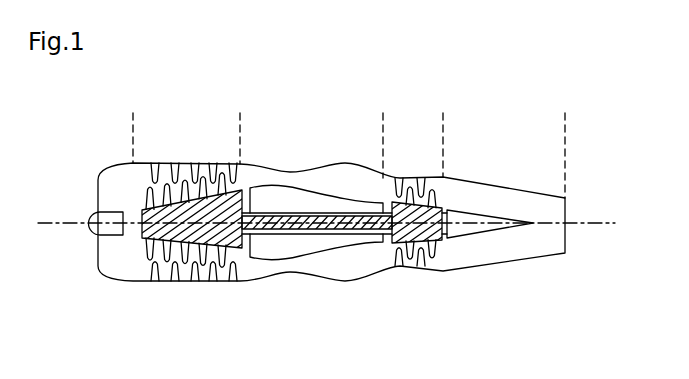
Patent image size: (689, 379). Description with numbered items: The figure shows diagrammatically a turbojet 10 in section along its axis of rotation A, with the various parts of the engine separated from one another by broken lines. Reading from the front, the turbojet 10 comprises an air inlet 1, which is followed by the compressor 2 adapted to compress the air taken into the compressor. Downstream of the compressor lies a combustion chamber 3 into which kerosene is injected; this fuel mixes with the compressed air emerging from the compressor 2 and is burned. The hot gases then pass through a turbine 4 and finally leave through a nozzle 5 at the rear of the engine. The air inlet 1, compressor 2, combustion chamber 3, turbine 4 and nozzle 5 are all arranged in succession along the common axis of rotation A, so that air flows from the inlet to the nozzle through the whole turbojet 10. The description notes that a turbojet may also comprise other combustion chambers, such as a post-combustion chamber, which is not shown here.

The air inlet 1 is at (111, 174).
The compressor 2 is at (192, 213).
The combustion chamber 3 is at (321, 186).
The turbine 4 is at (417, 192).
The nozzle 5 is at (503, 175).
The turbojet 10 is at (539, 270).
The axis of rotation A is at (326, 212).